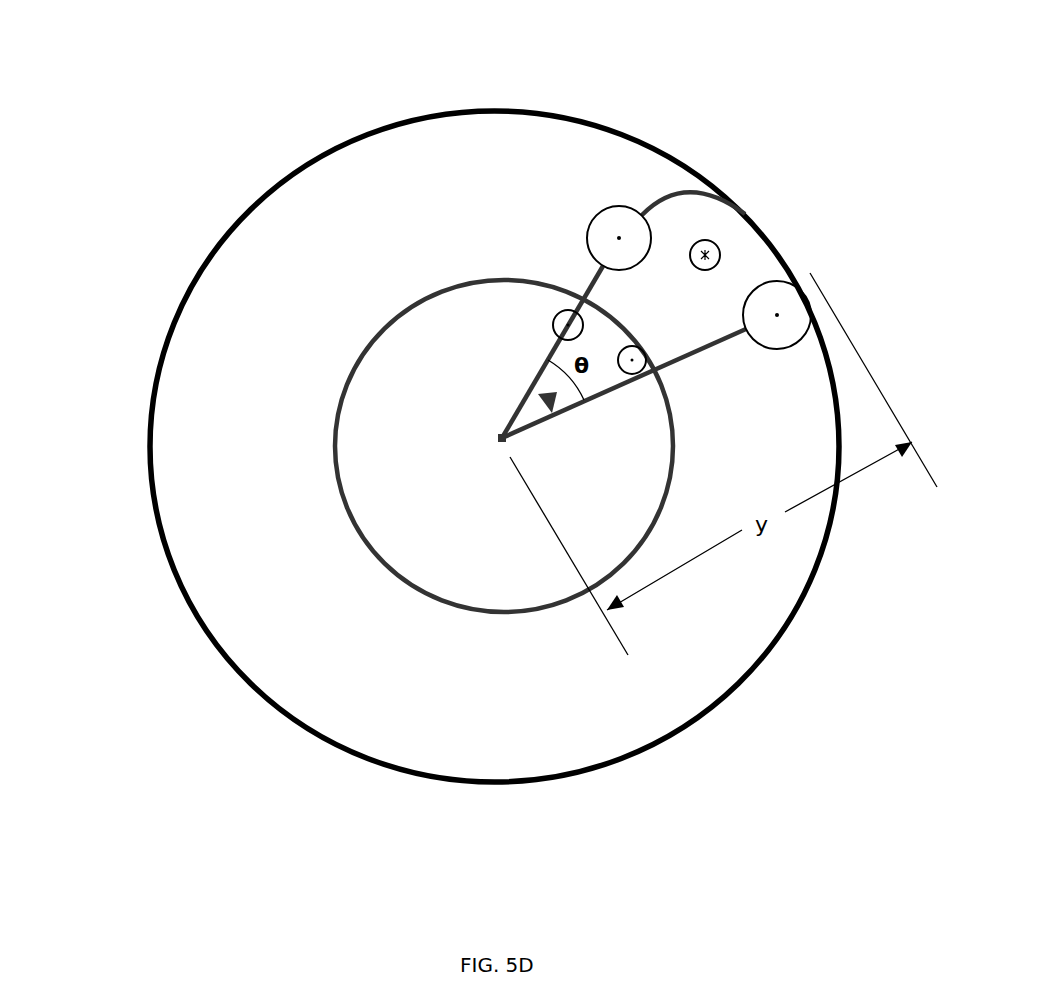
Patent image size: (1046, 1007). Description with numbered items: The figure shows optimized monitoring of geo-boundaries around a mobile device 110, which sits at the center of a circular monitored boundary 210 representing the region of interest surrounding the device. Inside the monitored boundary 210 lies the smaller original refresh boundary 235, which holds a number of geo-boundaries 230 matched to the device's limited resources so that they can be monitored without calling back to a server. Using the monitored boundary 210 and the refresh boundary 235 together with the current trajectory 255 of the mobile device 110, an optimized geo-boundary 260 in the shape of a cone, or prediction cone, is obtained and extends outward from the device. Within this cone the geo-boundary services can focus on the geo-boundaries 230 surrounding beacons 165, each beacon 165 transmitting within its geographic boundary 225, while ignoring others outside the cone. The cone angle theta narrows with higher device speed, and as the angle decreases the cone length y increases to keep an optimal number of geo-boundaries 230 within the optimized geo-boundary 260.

The monitored boundary 210 is at (200, 257).
The refresh boundary 235 is at (337, 415).
The mobile device 110 is at (500, 438).
The optimized geo-boundary 260 is at (596, 285).
The trajectory 255 is at (532, 407).
The geo-boundary 230 is at (590, 228).
The geographic boundary 225 is at (625, 223).
The beacon 165 is at (777, 313).